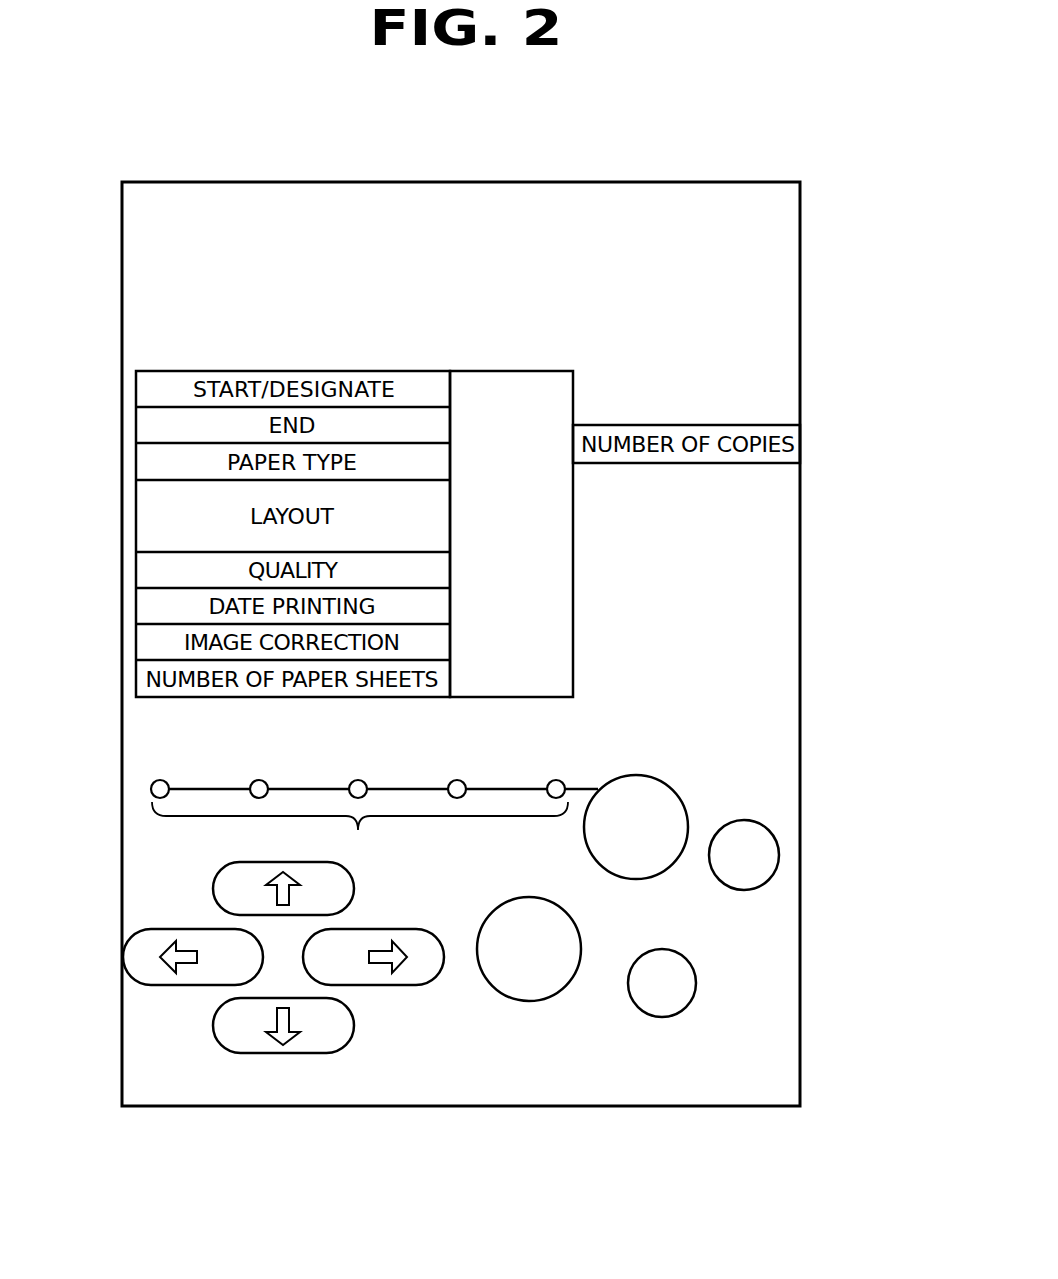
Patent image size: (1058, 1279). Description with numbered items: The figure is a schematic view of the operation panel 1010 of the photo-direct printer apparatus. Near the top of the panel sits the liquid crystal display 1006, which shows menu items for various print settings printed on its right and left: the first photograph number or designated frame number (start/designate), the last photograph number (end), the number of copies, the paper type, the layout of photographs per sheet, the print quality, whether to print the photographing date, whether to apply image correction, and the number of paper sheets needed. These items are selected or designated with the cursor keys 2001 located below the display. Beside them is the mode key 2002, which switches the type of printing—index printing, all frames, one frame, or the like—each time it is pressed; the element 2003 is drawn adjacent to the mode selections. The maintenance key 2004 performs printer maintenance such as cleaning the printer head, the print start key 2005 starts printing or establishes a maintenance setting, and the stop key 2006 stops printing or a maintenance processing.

The operation panel 1010 is at (683, 182).
The liquid crystal display 1006 is at (513, 371).
The cursor keys 2001 is at (195, 1018).
The mode key 2002 is at (673, 815).
The mode selection switch 2003 is at (154, 816).
The maintenance key 2004 is at (768, 855).
The print start key 2005 is at (526, 985).
The stop key 2006 is at (663, 1002).